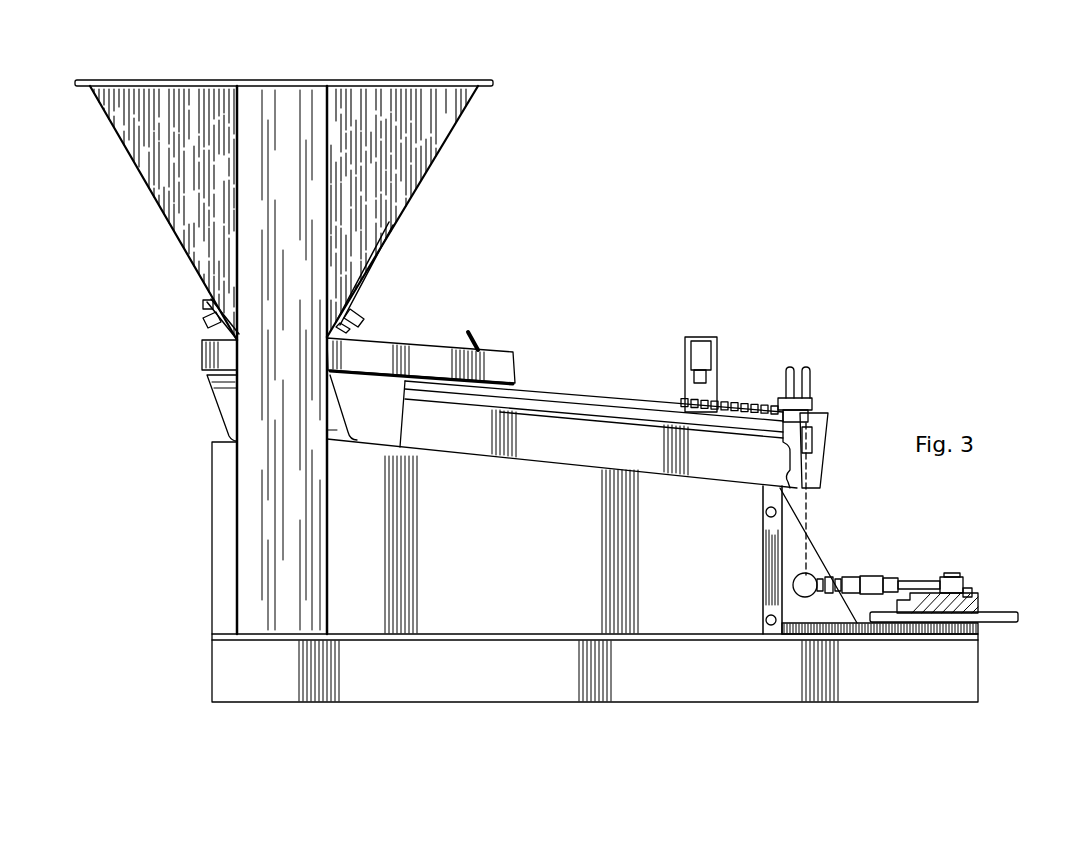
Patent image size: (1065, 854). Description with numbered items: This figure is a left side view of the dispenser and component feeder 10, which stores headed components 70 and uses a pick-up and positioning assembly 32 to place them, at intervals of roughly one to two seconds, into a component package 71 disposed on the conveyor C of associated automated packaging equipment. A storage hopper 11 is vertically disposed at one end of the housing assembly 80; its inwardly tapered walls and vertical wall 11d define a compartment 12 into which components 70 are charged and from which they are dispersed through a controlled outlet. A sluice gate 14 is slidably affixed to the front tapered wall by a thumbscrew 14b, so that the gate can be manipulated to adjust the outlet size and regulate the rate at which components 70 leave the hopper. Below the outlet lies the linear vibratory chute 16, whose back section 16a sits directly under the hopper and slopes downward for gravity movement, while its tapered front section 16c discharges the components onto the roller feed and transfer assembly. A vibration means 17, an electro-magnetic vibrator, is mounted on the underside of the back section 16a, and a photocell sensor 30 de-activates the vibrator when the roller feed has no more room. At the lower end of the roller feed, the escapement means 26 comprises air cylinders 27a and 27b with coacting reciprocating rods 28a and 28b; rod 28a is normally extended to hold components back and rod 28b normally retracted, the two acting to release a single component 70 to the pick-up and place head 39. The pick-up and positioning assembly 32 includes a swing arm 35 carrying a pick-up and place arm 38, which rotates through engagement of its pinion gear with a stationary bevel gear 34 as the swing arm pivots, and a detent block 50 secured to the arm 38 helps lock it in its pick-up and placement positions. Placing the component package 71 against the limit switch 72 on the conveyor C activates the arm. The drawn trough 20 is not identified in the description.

The dispenser and component feeder 10 is at (518, 278).
The storage hopper 11 is at (470, 80).
The vertical wall 11d is at (404, 147).
The inlet 12 is at (298, 81).
The sluice gate 14 is at (377, 260).
The thumbscrew 14b is at (355, 313).
The linear vibratory chute 16 is at (371, 336).
The back section 16a is at (363, 373).
The tapered front section 16c is at (442, 337).
The vibration means 17 is at (220, 399).
The feed trough 20 is at (452, 438).
The escapement means 26 is at (804, 356).
The air cylinder 27a is at (812, 370).
The air cylinder 27b is at (788, 366).
The reciprocating rod 28a is at (827, 412).
The reciprocating rod 28b is at (780, 400).
The photocell sensor 30 is at (700, 347).
The pick-up and positioning assembly 32 is at (885, 568).
The stationary bevel gear 34 is at (794, 583).
The swing arm 35 is at (836, 577).
The pick-up and place arm 38 is at (922, 578).
The pick-up and place head 39 is at (958, 577).
The detent block 50 is at (853, 577).
The headed component 70 is at (722, 405).
The component package 71 is at (975, 612).
The limit switch 72 is at (900, 613).
The housing assembly 80 is at (505, 634).
The conveyor C is at (1018, 617).